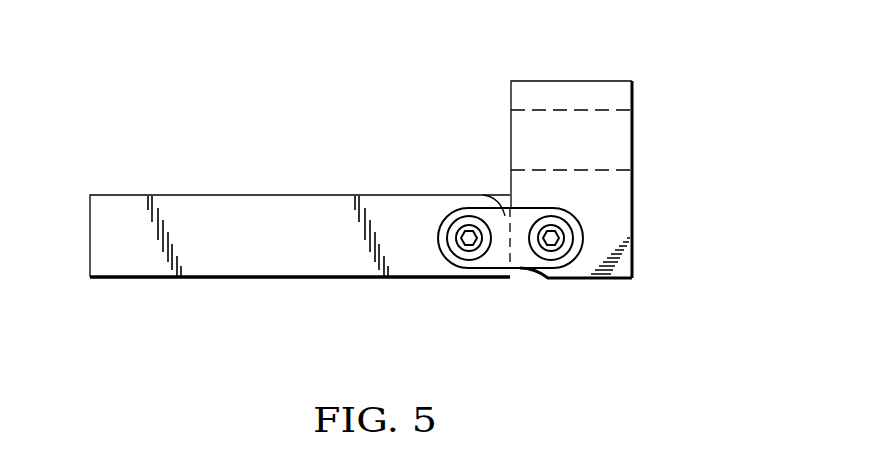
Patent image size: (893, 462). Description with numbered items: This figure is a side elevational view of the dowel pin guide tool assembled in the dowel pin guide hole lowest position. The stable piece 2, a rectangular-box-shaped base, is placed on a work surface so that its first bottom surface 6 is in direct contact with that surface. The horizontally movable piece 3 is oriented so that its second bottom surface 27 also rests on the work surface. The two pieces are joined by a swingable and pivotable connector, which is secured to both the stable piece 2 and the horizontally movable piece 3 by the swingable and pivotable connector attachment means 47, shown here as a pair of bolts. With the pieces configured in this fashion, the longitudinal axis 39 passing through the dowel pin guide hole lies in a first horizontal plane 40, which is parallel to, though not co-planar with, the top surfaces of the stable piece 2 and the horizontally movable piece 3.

The stable piece 2 is at (197, 279).
The horizontally movable piece 3 is at (612, 80).
The first bottom surface 6 is at (270, 321).
The second bottom surface 27 is at (588, 311).
The longitudinal axis 39 is at (560, 141).
The first horizontal plane 40 is at (560, 141).
The swingable and pivotable connector attachment means 47 is at (456, 262).